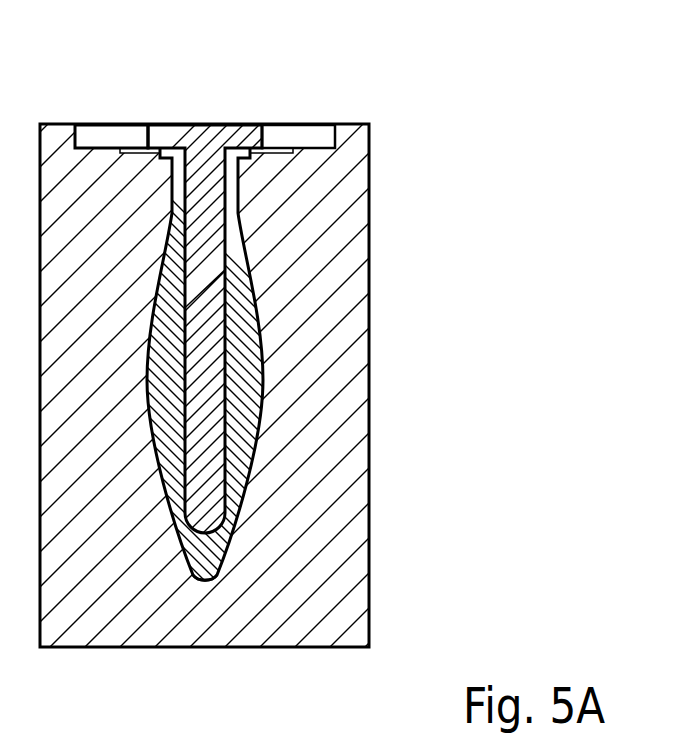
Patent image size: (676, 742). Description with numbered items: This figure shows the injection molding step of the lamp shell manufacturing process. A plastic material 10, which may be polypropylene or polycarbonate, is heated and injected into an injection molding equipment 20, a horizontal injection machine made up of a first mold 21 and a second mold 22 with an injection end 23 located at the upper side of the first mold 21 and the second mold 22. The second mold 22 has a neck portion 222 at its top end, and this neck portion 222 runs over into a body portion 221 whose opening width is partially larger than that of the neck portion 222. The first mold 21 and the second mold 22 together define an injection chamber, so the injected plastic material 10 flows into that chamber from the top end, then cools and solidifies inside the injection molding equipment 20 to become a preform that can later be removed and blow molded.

The plastic material 10 is at (190, 568).
The injection molding equipment 20 is at (338, 330).
The first mold 21 is at (330, 63).
The second mold 22 is at (338, 355).
The body portion 221 is at (348, 442).
The neck portion 222 is at (250, 195).
The injection end 23 is at (97, 132).